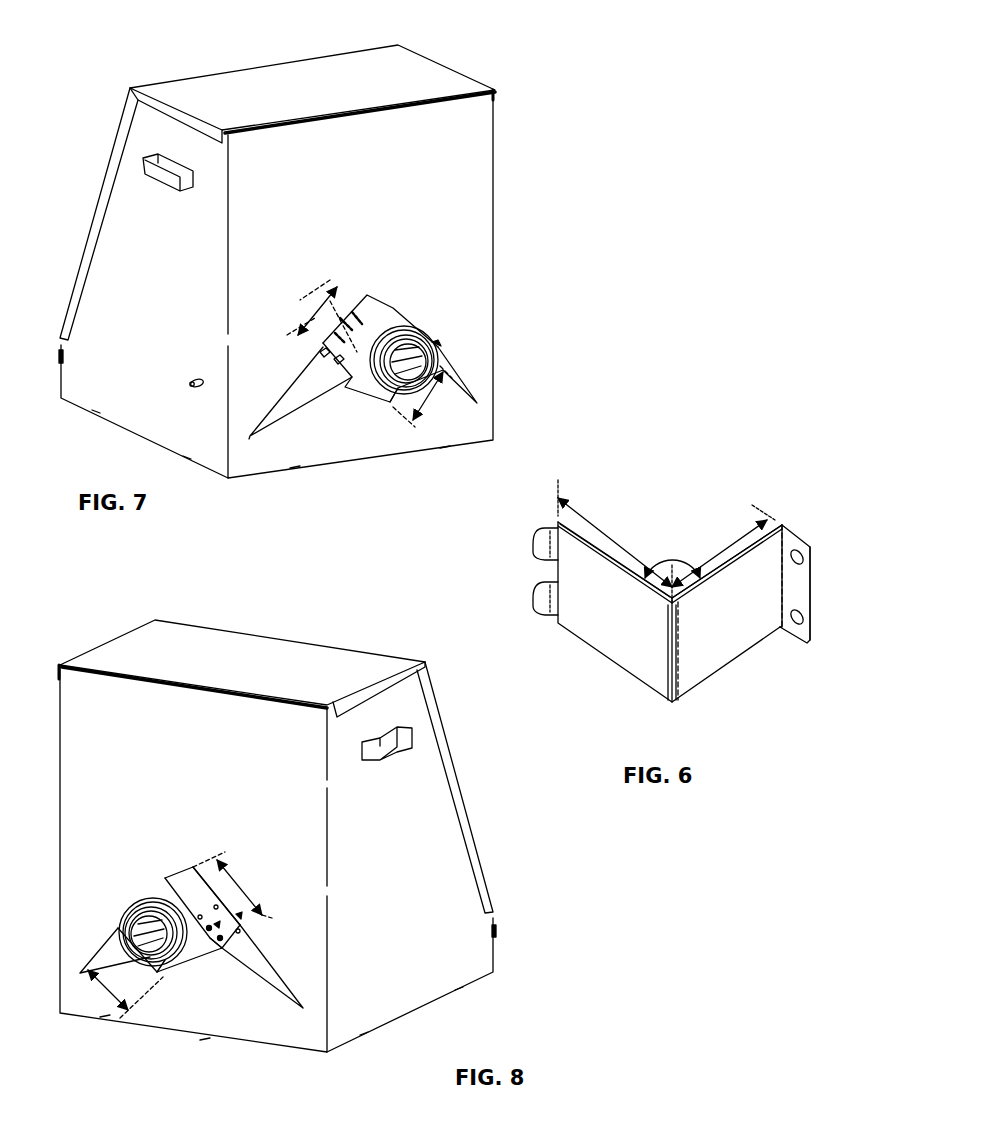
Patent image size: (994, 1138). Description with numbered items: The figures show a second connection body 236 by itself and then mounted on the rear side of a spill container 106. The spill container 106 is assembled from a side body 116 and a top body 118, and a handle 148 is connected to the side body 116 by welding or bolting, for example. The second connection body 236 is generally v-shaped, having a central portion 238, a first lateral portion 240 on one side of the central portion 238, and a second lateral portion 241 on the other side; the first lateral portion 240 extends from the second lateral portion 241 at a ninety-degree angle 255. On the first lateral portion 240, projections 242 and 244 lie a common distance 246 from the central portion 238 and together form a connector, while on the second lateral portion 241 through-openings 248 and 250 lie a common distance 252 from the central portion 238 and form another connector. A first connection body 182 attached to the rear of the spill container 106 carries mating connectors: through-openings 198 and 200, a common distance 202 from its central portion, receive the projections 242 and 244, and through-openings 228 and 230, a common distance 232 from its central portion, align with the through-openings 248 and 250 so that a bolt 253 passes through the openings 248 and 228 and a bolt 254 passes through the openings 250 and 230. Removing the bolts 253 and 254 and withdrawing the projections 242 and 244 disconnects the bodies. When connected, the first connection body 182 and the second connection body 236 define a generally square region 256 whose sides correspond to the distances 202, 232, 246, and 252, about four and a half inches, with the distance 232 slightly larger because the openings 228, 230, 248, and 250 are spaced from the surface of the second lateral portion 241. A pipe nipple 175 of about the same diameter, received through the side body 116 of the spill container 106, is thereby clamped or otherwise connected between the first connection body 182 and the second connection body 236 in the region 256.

In FIG. 7, the spill container 106 is at (498, 72).
In FIG. 8, the spill container 106 is at (123, 612).
In FIG. 7, the side body 116 is at (472, 191).
In FIG. 8, the side body 116 is at (172, 700).
In FIG. 7, the top body 118 is at (272, 80).
In FIG. 8, the top body 118 is at (240, 648).
In FIG. 8, the handle 148 is at (402, 753).
In FIG. 7, the pipe nipple 175 is at (388, 323).
In FIG. 8, the pipe nipple 175 is at (165, 897).
In FIG. 7, the first connection body 182 is at (470, 388).
In FIG. 8, the first connection body 182 is at (280, 975).
In FIG. 7, the through-opening 198 is at (348, 340).
In FIG. 7, the through-opening 200 is at (334, 338).
In FIG. 7, the common distance 202 is at (310, 307).
In FIG. 8, the through-opening 228 is at (220, 925).
In FIG. 8, the through-opening 230 is at (242, 918).
In FIG. 8, the common distance 232 is at (228, 868).
In FIG. 6, the second connection body 236 is at (615, 565).
In FIG. 6, the central portion 238 is at (688, 684).
In FIG. 7, the first lateral portion 240 is at (366, 390).
In FIG. 6, the first lateral portion 240 is at (605, 640).
In FIG. 8, the first lateral portion 240 is at (188, 960).
In FIG. 6, the second lateral portion 241 is at (742, 563).
In FIG. 8, the second lateral portion 241 is at (208, 938).
In FIG. 7, the projection 242 is at (338, 367).
In FIG. 6, the projection 242 is at (535, 553).
In FIG. 7, the projection 244 is at (323, 362).
In FIG. 6, the projection 244 is at (535, 606).
In FIG. 6, the common distance 246 is at (590, 522).
In FIG. 8, the common distance 246 is at (85, 977).
In FIG. 6, the through-opening 248 is at (836, 545).
In FIG. 6, the through-opening 250 is at (825, 625).
In FIG. 7, the common distance 252 is at (430, 400).
In FIG. 6, the common distance 252 is at (745, 522).
In FIG. 7, the bolt 253 is at (438, 352).
In FIG. 8, the bolt 253 is at (212, 940).
In FIG. 8, the bolt 254 is at (238, 935).
In FIG. 6, the angle 255 is at (682, 572).
In FIG. 7, the region 256 is at (403, 410).
In FIG. 8, the region 256 is at (140, 975).